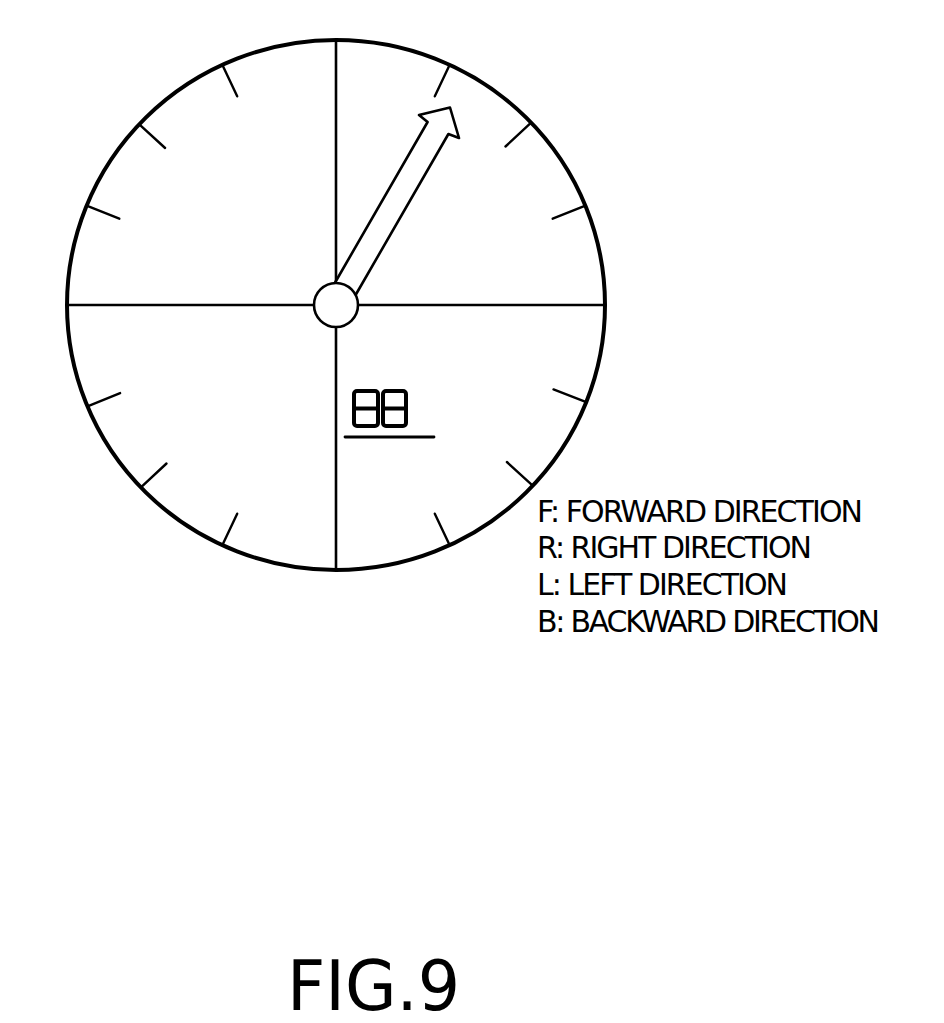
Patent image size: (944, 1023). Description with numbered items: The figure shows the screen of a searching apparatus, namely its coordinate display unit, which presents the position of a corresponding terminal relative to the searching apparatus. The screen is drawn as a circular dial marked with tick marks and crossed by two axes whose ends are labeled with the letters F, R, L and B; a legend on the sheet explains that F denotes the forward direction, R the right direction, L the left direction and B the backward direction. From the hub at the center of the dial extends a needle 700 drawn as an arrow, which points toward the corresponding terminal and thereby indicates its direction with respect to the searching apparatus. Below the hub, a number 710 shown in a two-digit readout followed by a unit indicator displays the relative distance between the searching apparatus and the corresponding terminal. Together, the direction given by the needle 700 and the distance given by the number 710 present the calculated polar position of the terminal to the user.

The needle 700 is at (462, 124).
The number 710 is at (390, 437).
The forward direction label F is at (343, 152).
The right direction label R is at (487, 307).
The left direction label L is at (184, 309).
The backward direction label B is at (337, 456).